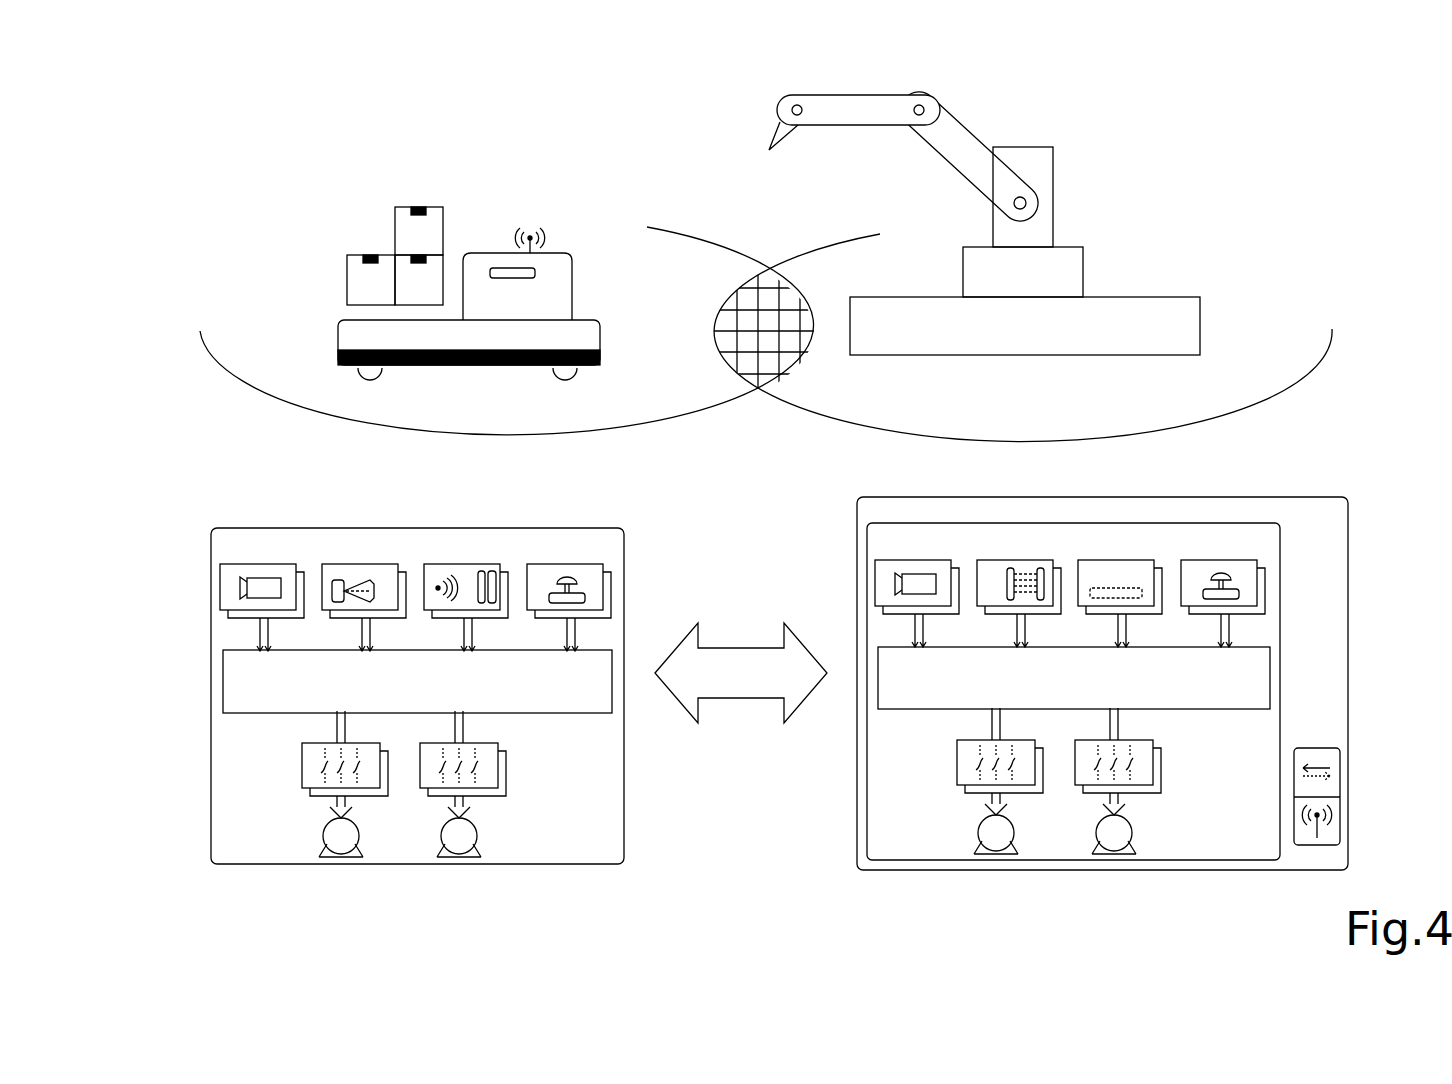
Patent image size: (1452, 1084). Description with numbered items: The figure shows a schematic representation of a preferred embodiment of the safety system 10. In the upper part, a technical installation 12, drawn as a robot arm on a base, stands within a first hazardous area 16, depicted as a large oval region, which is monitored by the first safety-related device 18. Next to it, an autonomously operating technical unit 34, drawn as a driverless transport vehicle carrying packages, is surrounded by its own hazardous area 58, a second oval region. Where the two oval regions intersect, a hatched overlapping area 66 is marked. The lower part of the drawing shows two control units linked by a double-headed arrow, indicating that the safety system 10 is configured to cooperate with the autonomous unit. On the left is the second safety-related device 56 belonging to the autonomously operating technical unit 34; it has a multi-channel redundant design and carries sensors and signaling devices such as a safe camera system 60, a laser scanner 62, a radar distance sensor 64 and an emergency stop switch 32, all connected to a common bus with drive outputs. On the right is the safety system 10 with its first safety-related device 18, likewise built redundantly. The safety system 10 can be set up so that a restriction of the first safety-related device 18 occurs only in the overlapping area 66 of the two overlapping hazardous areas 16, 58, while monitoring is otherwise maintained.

The safety system 10 is at (1317, 582).
The technical installation 12 is at (1098, 152).
The first hazardous area 16 is at (1283, 350).
The first safety-related device 18 is at (1257, 752).
The emergency stop switch 32 is at (546, 577).
The autonomously operating technical unit 34 is at (478, 195).
The second safety-related device 56 is at (625, 793).
The hazardous area 58 is at (258, 337).
The safe camera system 60 is at (231, 574).
The laser scanner 62 is at (329, 572).
The radar distance sensor 64 is at (433, 575).
The overlapping area 66 is at (770, 300).